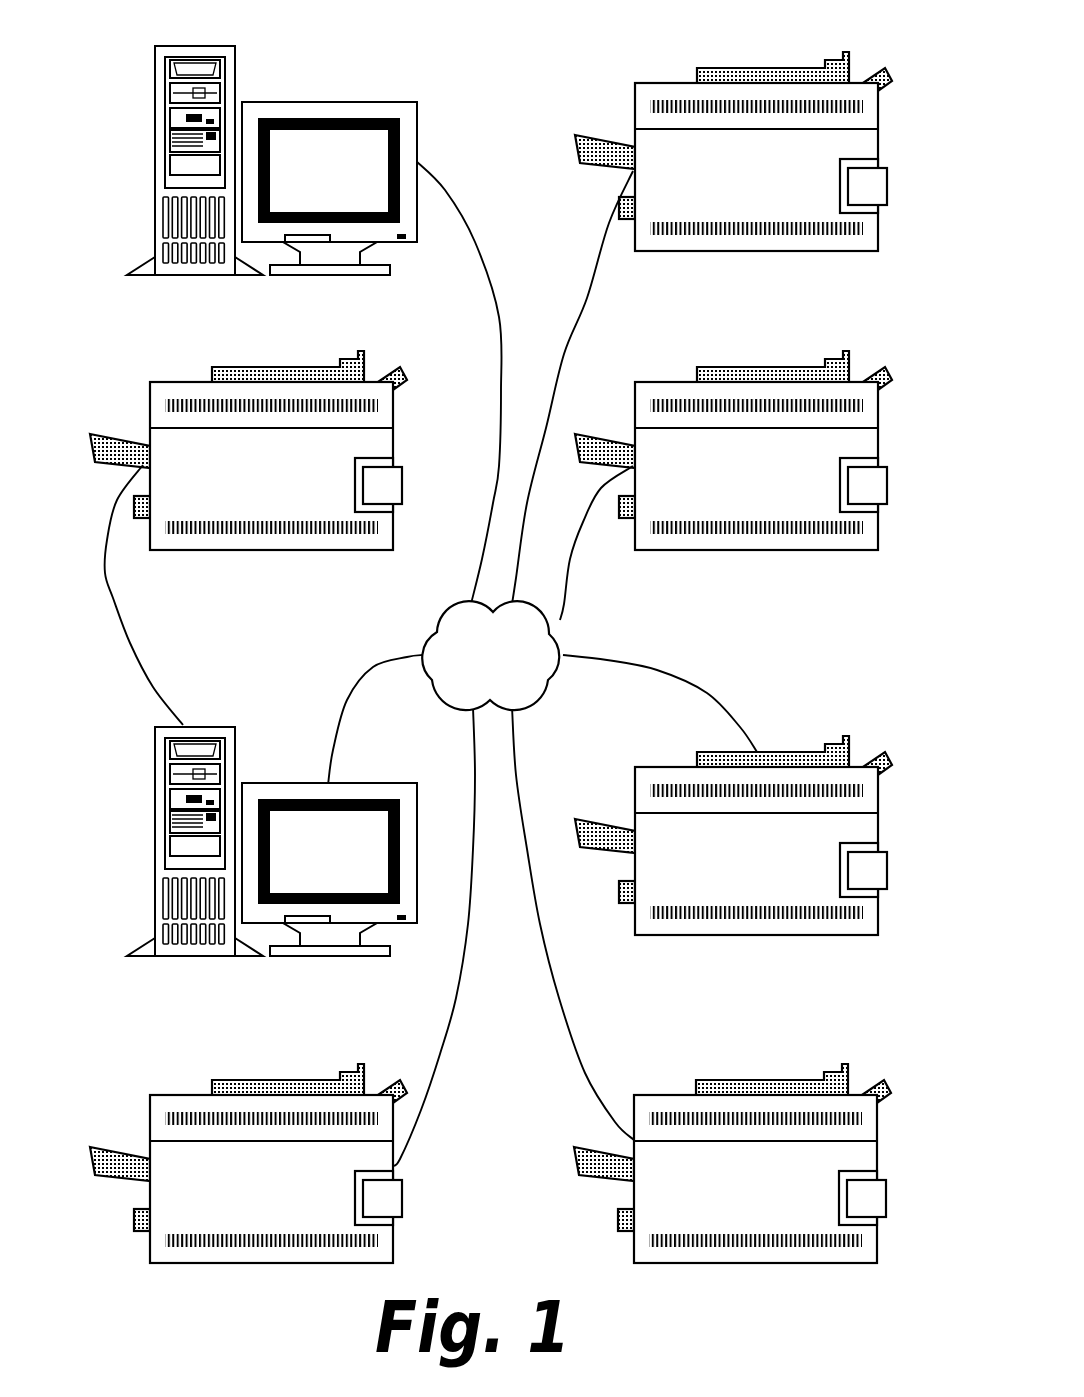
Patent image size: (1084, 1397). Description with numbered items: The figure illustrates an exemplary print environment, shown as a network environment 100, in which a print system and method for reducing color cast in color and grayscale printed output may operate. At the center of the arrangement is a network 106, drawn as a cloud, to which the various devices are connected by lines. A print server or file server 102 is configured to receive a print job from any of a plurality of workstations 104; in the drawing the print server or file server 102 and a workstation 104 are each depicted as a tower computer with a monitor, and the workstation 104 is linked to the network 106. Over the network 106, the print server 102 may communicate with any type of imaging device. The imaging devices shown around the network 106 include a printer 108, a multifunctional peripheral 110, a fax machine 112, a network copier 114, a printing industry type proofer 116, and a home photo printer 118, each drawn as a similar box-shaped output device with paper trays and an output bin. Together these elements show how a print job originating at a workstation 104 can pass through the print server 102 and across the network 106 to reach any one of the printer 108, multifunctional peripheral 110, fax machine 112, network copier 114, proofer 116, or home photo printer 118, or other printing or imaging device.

The network environment 100 is at (412, 48).
The print server or file server 102 is at (161, 302).
The workstation 104 is at (226, 985).
The network 106 is at (512, 652).
The printer 108 is at (738, 279).
The multifunctional peripheral 110 is at (643, 578).
The fax machine 112 is at (706, 963).
The network copier 114 is at (692, 1291).
The proofer 116 is at (250, 1291).
The home photo printer 118 is at (220, 578).